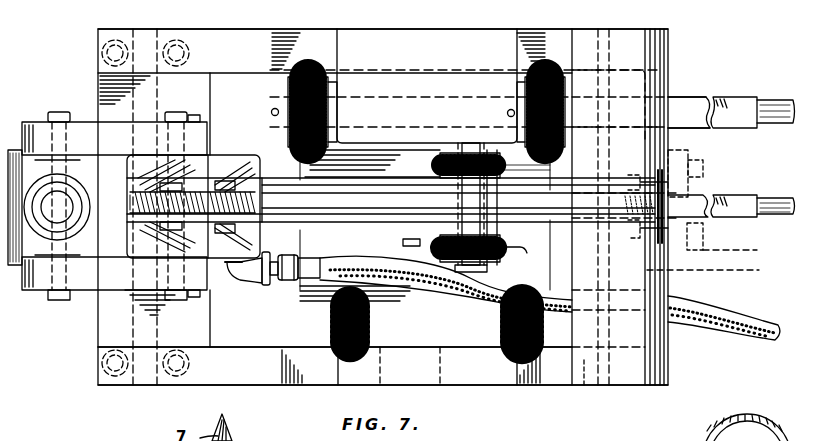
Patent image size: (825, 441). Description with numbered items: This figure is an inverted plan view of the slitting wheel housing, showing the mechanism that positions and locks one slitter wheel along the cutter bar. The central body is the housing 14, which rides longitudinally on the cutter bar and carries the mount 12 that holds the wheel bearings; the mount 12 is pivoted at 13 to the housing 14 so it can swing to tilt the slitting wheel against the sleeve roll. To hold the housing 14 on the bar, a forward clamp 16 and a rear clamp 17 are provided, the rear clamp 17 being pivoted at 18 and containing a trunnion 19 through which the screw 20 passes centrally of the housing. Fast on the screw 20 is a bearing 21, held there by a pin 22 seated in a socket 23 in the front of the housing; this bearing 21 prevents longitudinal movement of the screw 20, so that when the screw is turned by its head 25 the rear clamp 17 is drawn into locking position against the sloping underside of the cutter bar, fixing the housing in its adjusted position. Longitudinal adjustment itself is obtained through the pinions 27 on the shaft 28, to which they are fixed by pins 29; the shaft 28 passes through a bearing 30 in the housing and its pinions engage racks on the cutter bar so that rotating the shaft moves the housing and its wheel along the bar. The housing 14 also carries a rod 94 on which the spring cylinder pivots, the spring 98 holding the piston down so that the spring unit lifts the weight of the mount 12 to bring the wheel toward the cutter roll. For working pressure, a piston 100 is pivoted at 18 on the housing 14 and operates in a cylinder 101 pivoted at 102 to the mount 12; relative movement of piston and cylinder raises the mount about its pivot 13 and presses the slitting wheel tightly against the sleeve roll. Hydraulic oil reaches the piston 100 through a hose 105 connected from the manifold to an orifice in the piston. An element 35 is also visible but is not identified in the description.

The mount 12 is at (383, 207).
The pivot 13 is at (137, 29).
The housing 14 is at (238, 352).
The forward clamp 16 is at (575, 373).
The rear clamp 17 is at (235, 157).
The pivot 18 is at (177, 110).
The trunnion 19 is at (193, 120).
The screw 20 is at (303, 200).
The bearing 21 is at (630, 182).
The pin 22 is at (627, 229).
The socket 23 is at (622, 240).
The head 25 is at (759, 270).
The pinion 27 is at (318, 80).
The shaft 28 is at (698, 98).
The pin 29 is at (507, 113).
The bearing 30 is at (367, 95).
The knob 35 is at (743, 421).
The rod 94 is at (58, 112).
The spring 98 is at (88, 233).
The piston 100 is at (358, 166).
The cylinder 101 is at (332, 225).
The pivot 102 is at (467, 240).
The hose 105 is at (715, 325).